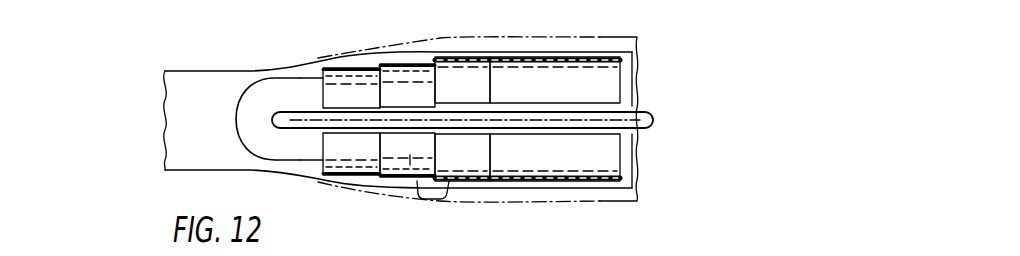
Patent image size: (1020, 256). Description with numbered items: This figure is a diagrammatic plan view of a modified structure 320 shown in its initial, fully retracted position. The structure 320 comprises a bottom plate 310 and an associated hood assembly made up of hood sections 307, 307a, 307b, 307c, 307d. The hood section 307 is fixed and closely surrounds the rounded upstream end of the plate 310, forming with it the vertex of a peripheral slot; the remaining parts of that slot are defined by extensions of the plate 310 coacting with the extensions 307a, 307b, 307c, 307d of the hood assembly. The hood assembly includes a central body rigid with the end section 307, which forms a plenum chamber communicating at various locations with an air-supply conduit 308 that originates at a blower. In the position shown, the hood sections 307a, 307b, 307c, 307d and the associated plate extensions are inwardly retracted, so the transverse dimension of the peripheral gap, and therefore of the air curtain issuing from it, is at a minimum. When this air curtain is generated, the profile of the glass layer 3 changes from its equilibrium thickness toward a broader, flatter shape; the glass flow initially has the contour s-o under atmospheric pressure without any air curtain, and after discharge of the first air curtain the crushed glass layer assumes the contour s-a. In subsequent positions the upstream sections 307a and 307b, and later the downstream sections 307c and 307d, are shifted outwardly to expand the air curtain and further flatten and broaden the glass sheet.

The glass layer 3 is at (175, 83).
The hood section 307 is at (263, 155).
The hood section 307a is at (323, 69).
The hood section 307b is at (408, 63).
The hood section 307c is at (468, 57).
The hood section 307d is at (560, 75).
The air-supply conduit 308 is at (648, 118).
The bottom plate 310 is at (428, 202).
The modified structure 320 is at (361, 66).
The contour of glass flow s-o is at (603, 36).
The contour of crushed glass layer s-a is at (615, 189).